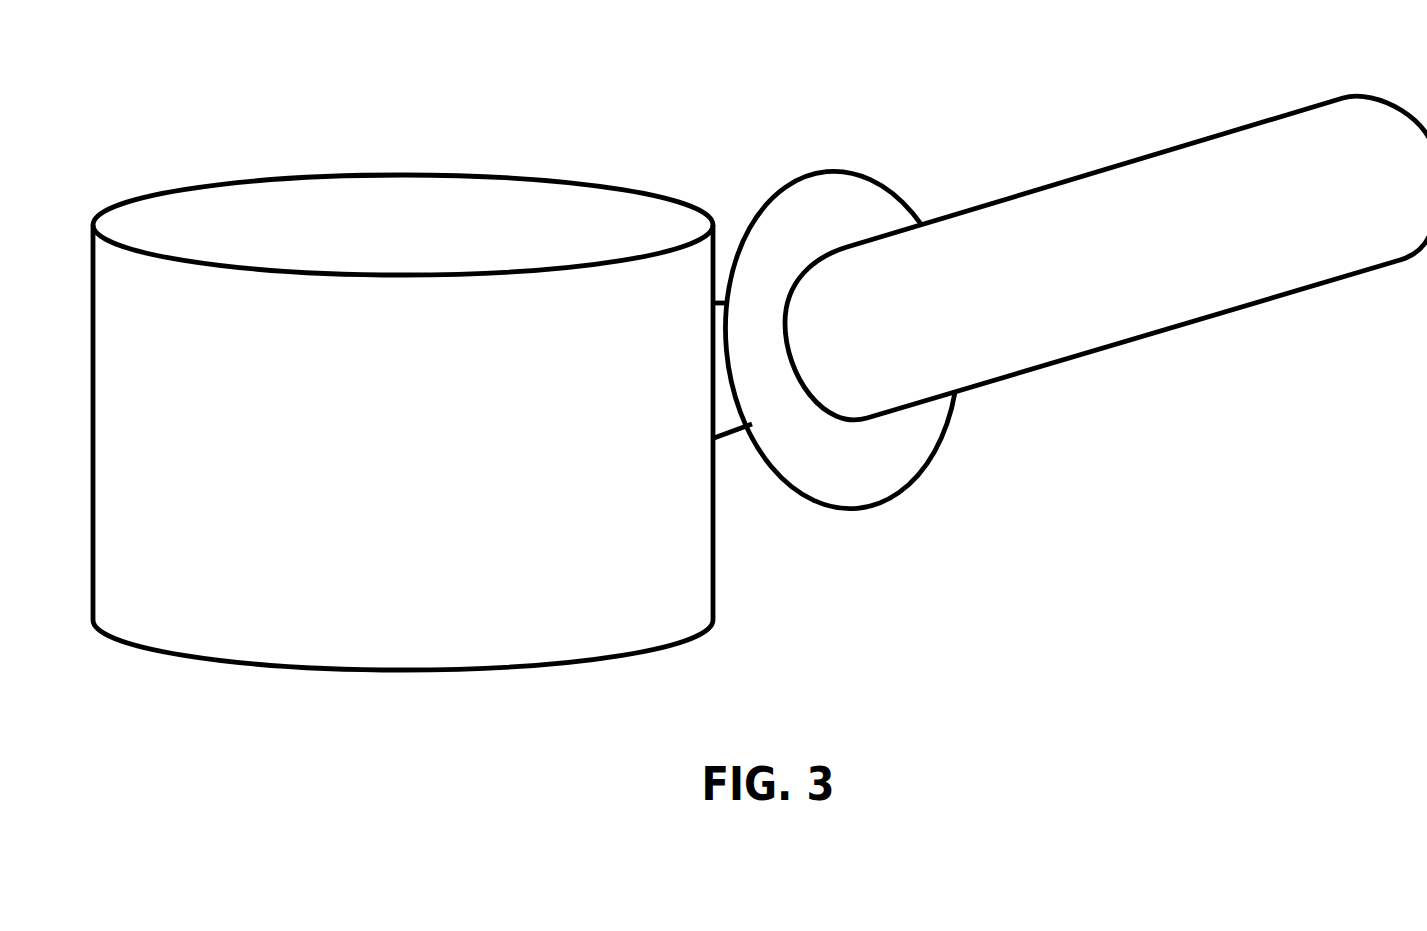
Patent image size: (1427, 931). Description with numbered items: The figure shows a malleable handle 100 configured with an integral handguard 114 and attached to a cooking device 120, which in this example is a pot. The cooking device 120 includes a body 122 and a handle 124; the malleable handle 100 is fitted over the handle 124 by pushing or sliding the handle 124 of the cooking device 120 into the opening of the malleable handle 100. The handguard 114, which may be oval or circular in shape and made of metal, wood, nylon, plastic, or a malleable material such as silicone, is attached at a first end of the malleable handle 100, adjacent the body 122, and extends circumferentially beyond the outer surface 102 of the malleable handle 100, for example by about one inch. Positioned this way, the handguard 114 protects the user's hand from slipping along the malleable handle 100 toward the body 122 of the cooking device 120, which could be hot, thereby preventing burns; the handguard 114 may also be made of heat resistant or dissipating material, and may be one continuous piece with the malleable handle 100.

The malleable handle 100 is at (1069, 305).
The outer surface 102 is at (1102, 274).
The handguard 114 is at (844, 226).
The cooking device 120 is at (403, 369).
The body 122 is at (372, 441).
The handle 124 is at (733, 407).